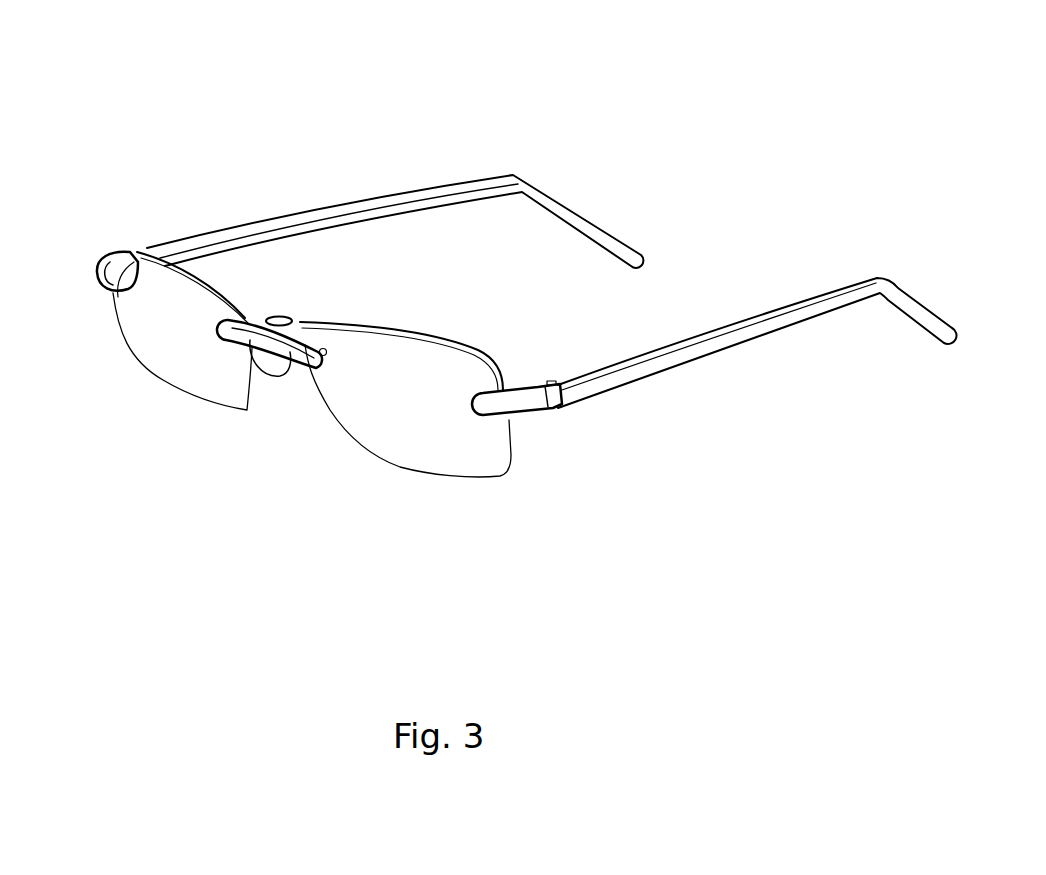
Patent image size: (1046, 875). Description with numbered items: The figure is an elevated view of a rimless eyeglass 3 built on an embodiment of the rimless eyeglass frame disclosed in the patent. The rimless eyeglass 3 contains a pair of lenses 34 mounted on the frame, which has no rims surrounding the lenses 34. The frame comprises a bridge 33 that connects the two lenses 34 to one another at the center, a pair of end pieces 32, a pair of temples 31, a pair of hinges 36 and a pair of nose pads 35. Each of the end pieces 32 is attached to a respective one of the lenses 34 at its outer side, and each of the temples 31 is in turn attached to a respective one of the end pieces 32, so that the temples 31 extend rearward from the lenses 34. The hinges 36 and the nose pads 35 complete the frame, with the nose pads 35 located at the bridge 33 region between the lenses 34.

The rimless eyeglass 3 is at (255, 200).
The temple 31 is at (623, 385).
The end piece 32 is at (525, 421).
The bridge 33 is at (265, 359).
The lens 34 is at (422, 438).
The nose pad 35 is at (291, 313).
The hinge 36 is at (124, 247).